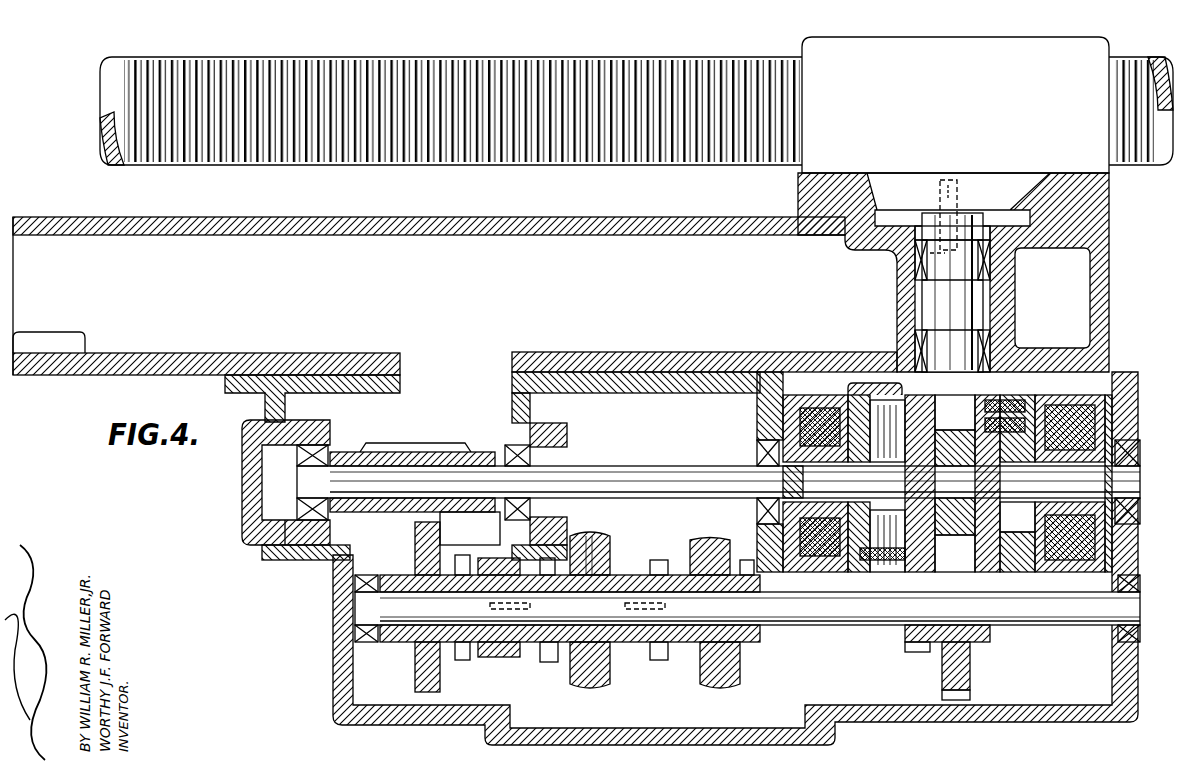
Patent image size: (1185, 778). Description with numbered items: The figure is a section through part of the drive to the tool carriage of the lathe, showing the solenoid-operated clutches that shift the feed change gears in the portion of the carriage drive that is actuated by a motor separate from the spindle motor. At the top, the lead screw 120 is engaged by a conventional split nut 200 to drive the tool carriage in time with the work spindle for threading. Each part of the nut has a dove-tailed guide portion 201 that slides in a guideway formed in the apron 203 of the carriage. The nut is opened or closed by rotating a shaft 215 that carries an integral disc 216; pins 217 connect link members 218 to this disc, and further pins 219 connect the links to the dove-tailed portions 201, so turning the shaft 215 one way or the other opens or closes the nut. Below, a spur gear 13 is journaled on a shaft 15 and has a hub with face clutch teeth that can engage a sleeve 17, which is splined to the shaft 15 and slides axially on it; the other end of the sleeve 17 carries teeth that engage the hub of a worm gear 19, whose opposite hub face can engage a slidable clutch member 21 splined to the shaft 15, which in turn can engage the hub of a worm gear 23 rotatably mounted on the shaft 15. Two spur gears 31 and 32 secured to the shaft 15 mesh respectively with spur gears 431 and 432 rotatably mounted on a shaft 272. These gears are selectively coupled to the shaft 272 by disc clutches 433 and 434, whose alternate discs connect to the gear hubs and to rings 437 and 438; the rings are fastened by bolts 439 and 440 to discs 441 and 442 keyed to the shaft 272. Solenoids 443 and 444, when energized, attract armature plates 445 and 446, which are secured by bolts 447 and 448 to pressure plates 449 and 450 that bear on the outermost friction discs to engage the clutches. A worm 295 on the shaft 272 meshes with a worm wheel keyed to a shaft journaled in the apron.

The lead screw 120 is at (546, 68).
The split nut 200 is at (957, 52).
The dove-tailed guide portion 201 is at (845, 236).
The apron 203 is at (1110, 220).
The shaft 215 is at (972, 305).
The disc 216 is at (930, 215).
The pins 217 is at (930, 253).
The link members 218 is at (982, 228).
The pins 219 is at (955, 197).
The shaft 272 is at (618, 466).
The worm 295 is at (415, 447).
The spur gear 13 is at (440, 545).
The shaft 15 is at (818, 628).
The sleeve 17 is at (503, 563).
The worm gear 19 is at (603, 545).
The slidable clutch member 21 is at (668, 563).
The worm gear 23 is at (702, 665).
The spur gear 31 is at (910, 640).
The spur gear 32 is at (968, 658).
The spur gear 431 is at (920, 448).
The spur gear 432 is at (957, 440).
The disc clutch 433 is at (870, 394).
The disc clutch 434 is at (985, 448).
The ring 437 is at (865, 405).
The ring 438 is at (1012, 548).
The bolts 439 is at (882, 420).
The bolts 440 is at (995, 575).
The disc 441 is at (872, 458).
The disc 442 is at (1050, 548).
The solenoid 443 is at (805, 560).
The solenoid 444 is at (1095, 575).
The armature plate 445 is at (853, 555).
The armature plate 446 is at (1028, 398).
The bolts 447 is at (888, 575).
The bolts 448 is at (984, 406).
The pressure plate 449 is at (896, 392).
The pressure plate 450 is at (984, 426).